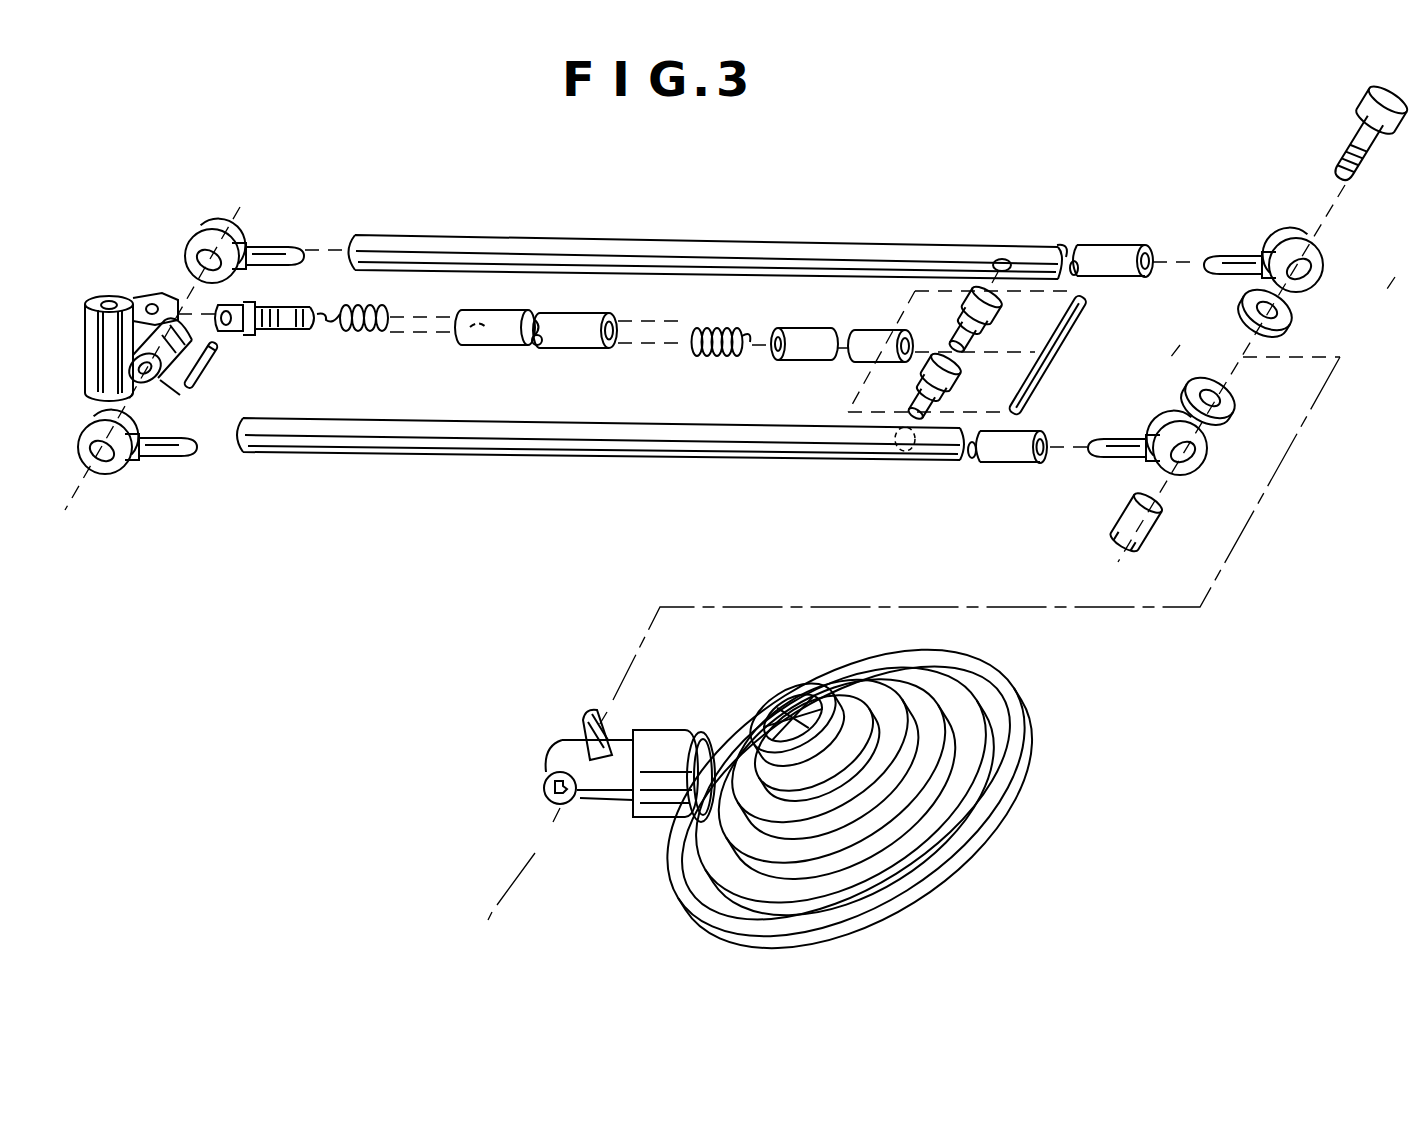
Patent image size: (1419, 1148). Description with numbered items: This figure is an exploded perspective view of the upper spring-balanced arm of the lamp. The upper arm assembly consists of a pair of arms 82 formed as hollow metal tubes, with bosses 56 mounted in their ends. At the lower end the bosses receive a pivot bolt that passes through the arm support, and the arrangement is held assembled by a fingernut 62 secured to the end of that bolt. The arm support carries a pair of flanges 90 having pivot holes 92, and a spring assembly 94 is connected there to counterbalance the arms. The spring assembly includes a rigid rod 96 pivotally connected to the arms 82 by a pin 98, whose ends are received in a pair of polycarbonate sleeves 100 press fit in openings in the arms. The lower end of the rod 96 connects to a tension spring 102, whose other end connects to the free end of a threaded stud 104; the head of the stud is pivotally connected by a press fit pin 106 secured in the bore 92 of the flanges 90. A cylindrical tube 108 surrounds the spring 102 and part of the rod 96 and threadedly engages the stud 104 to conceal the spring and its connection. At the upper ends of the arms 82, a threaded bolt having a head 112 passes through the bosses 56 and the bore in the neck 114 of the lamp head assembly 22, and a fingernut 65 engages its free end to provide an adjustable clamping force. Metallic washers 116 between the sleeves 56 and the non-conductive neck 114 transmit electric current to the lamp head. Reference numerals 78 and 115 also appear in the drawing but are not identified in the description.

The lamp head assembly 22 is at (1017, 732).
The bosses 56 is at (196, 229).
The fingernut 62 is at (93, 350).
The fingernut 65 is at (1112, 533).
The clamp base 78 is at (167, 383).
The arms 82 is at (777, 240).
The flanges 90 is at (160, 298).
The pivot holes 92 is at (147, 302).
The spring assembly 94 is at (567, 348).
The rigid rod 96 is at (797, 357).
The pin 98 is at (1072, 340).
The polycarbonate sleeves 100 is at (963, 327).
The tension spring 102 is at (703, 353).
The threaded stud 104 is at (247, 337).
The press fit pin 106 is at (207, 360).
The cylindrical tube 108 is at (485, 358).
The head 112 is at (1373, 97).
The neck 114 is at (630, 740).
The assembly 115 is at (472, 628).
The metallic washers 116 is at (1295, 313).